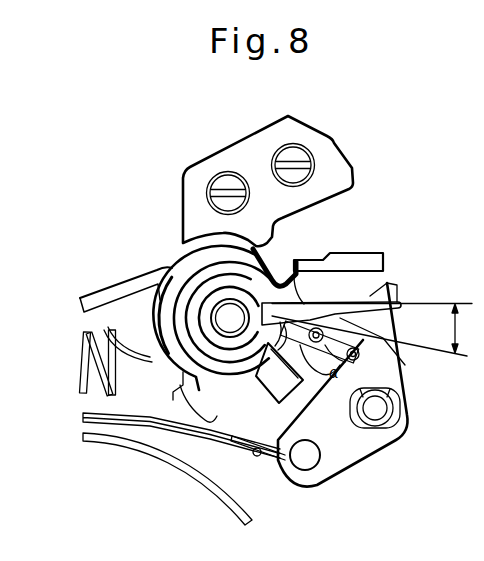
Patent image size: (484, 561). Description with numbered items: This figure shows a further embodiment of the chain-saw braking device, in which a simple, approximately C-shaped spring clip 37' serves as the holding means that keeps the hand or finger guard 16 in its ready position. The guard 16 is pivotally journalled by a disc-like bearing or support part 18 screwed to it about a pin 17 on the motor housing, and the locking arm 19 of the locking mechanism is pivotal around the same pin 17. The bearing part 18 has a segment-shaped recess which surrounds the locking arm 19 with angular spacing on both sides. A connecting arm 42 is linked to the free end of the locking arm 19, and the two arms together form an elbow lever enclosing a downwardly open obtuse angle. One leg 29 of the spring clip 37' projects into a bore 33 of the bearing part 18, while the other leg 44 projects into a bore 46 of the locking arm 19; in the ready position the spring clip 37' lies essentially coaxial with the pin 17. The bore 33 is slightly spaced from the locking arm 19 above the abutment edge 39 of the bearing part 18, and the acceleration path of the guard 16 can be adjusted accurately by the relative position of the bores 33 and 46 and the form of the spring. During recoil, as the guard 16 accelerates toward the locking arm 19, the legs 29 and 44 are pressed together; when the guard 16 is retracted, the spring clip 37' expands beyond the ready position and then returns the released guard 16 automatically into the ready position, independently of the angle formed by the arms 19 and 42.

The hand or finger guard 16 is at (240, 147).
The pin 17 is at (230, 318).
The bearing or support part 18 is at (237, 252).
The locking arm 19 is at (302, 319).
The leg of the spring clip 29 is at (271, 282).
The bore of the bearing part 33 is at (269, 281).
The spring clip 37' is at (149, 314).
The abutment edge of the bearing part 39 is at (345, 304).
The connecting arm 42 is at (407, 377).
The leg of the spring clip 44 is at (254, 393).
The bore of the locking arm 46 is at (315, 373).